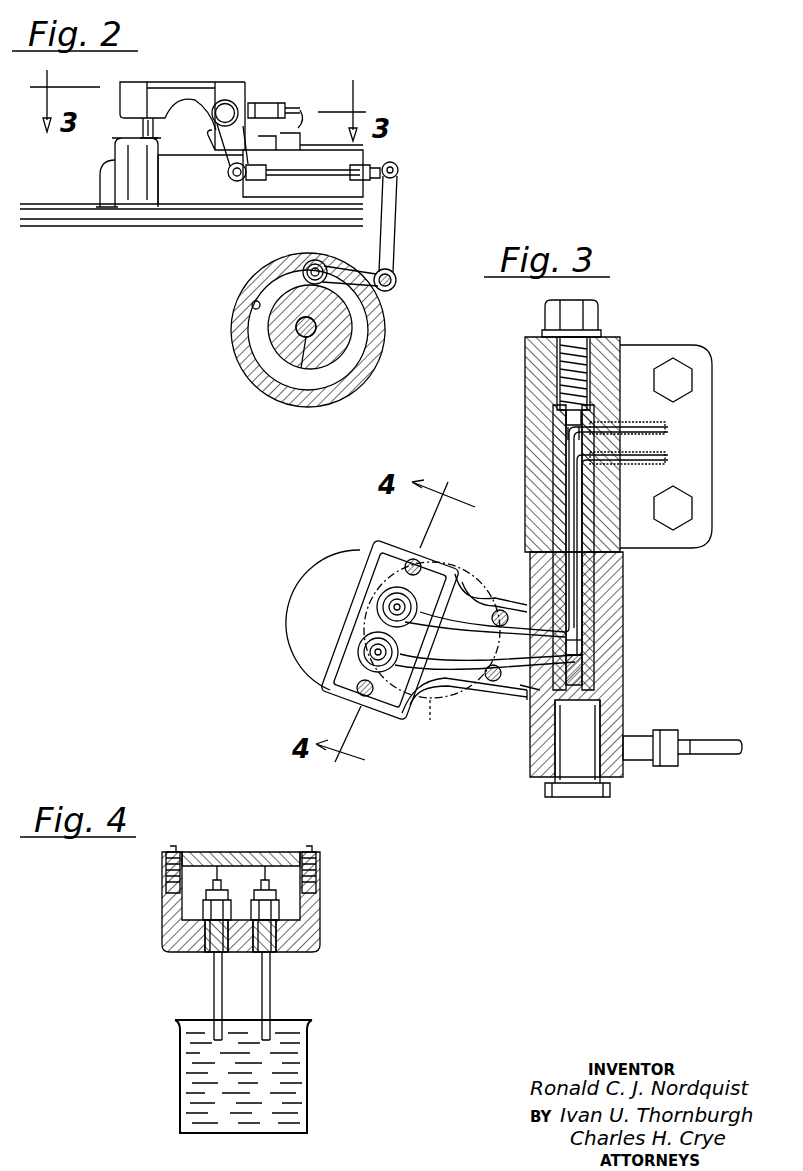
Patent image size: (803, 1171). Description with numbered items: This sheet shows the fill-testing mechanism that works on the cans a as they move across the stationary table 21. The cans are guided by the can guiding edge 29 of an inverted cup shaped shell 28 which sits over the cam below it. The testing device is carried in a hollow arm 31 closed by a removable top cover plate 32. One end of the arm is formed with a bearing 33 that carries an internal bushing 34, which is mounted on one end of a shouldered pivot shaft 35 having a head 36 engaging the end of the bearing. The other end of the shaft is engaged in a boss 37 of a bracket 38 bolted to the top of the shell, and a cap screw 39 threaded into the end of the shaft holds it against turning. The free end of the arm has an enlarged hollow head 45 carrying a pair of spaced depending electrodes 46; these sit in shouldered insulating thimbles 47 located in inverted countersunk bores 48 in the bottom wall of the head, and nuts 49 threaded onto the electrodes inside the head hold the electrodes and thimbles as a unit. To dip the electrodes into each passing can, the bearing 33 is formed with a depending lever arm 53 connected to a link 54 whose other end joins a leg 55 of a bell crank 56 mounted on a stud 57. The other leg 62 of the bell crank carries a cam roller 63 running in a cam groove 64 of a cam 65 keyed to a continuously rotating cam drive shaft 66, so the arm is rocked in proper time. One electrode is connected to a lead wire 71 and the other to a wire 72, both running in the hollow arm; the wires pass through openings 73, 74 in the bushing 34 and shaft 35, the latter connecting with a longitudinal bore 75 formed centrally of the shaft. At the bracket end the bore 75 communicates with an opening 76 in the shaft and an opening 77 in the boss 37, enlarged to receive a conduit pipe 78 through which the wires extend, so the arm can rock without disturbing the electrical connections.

In FIG. 2, the stationary table 21 is at (76, 227).
In FIG. 2, the inverted cup shaped shell 28 is at (185, 200).
In FIG. 2, the can guiding edge 29 is at (92, 206).
In FIG. 2, the hollow arm 31 is at (196, 90).
In FIG. 3, the hollow arm 31 is at (489, 604).
In FIG. 2, the top cover plate 32 is at (170, 82).
In FIG. 4, the top cover plate 32 is at (256, 852).
In FIG. 2, the bearing 33 is at (242, 92).
In FIG. 3, the bearing 33 is at (620, 700).
In FIG. 3, the bushing 34 is at (596, 666).
In FIG. 3, the pivot shaft 35 is at (582, 786).
In FIG. 2, the head 36 is at (222, 115).
In FIG. 3, the head 36 is at (568, 790).
In FIG. 3, the boss 37 is at (525, 392).
In FIG. 2, the bracket 38 is at (272, 138).
In FIG. 3, the bracket 38 is at (652, 352).
In FIG. 3, the cap screw 39 is at (596, 311).
In FIG. 2, the hollow head 45 is at (122, 100).
In FIG. 3, the hollow head 45 is at (336, 690).
In FIG. 4, the hollow head 45 is at (318, 940).
In FIG. 2, the electrodes 46 is at (146, 126).
In FIG. 3, the electrodes 46 is at (370, 645).
In FIG. 4, the electrodes 46 is at (262, 1000).
In FIG. 4, the insulating thimbles 47 is at (300, 950).
In FIG. 4, the countersunk bores 48 is at (192, 935).
In FIG. 4, the nuts 49 is at (205, 908).
In FIG. 2, the lever arm 53 is at (232, 150).
In FIG. 2, the link 54 is at (302, 175).
In FIG. 3, the link 54 is at (716, 742).
In FIG. 2, the leg 55 is at (395, 205).
In FIG. 2, the bell crank 56 is at (394, 272).
In FIG. 2, the stud 57 is at (396, 281).
In FIG. 2, the leg 62 is at (363, 277).
In FIG. 2, the cam roller 63 is at (316, 261).
In FIG. 2, the cam groove 64 is at (250, 304).
In FIG. 2, the cam 65 is at (237, 340).
In FIG. 2, the cam drive shaft 66 is at (304, 340).
In FIG. 2, the lead wire 71 is at (298, 108).
In FIG. 3, the lead wire 71 is at (672, 432).
In FIG. 4, the lead wire 71 is at (277, 880).
In FIG. 2, the wire 72 is at (296, 122).
In FIG. 3, the wire 72 is at (672, 460).
In FIG. 4, the wire 72 is at (208, 880).
In FIG. 3, the opening 73 is at (512, 686).
In FIG. 3, the opening 74 is at (527, 700).
In FIG. 3, the longitudinal bore 75 is at (604, 655).
In FIG. 3, the opening 76 is at (591, 427).
In FIG. 3, the opening 77 is at (590, 418).
In FIG. 2, the conduit pipe 78 is at (280, 100).
In FIG. 3, the conduit pipe 78 is at (660, 425).
In FIG. 2, the cans a is at (115, 147).
In FIG. 3, the cans a is at (294, 630).
In FIG. 4, the cans a is at (310, 1082).